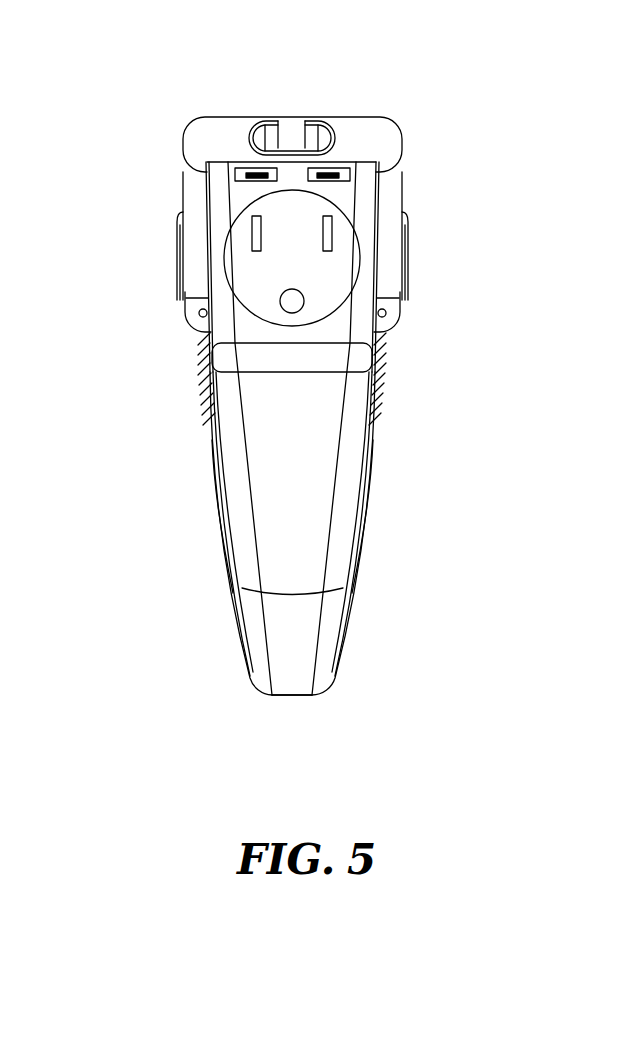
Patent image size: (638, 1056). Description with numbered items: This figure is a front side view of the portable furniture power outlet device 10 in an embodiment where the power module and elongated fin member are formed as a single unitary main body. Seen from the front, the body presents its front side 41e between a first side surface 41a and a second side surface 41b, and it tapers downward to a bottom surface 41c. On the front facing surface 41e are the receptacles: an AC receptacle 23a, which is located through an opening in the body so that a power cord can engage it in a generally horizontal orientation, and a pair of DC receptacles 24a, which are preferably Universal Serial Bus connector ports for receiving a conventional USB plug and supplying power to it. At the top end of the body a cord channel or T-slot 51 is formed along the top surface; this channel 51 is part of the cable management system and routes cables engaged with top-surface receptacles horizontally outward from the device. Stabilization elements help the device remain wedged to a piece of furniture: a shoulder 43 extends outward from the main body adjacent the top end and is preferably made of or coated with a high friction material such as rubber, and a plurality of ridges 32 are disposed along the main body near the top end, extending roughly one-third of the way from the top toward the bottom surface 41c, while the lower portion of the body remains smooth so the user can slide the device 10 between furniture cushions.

The power outlet device 10 is at (125, 72).
The cord channel/T-slot 51 is at (293, 133).
The shoulder 43 is at (183, 151).
The DC receptacle 24a is at (242, 179).
The AC receptacle 23a is at (342, 255).
The ridges 32 is at (198, 373).
The first side surface 41a is at (373, 456).
The second side surface 41b is at (212, 456).
The bottom surface 41c is at (291, 697).
The front side 41e is at (315, 466).